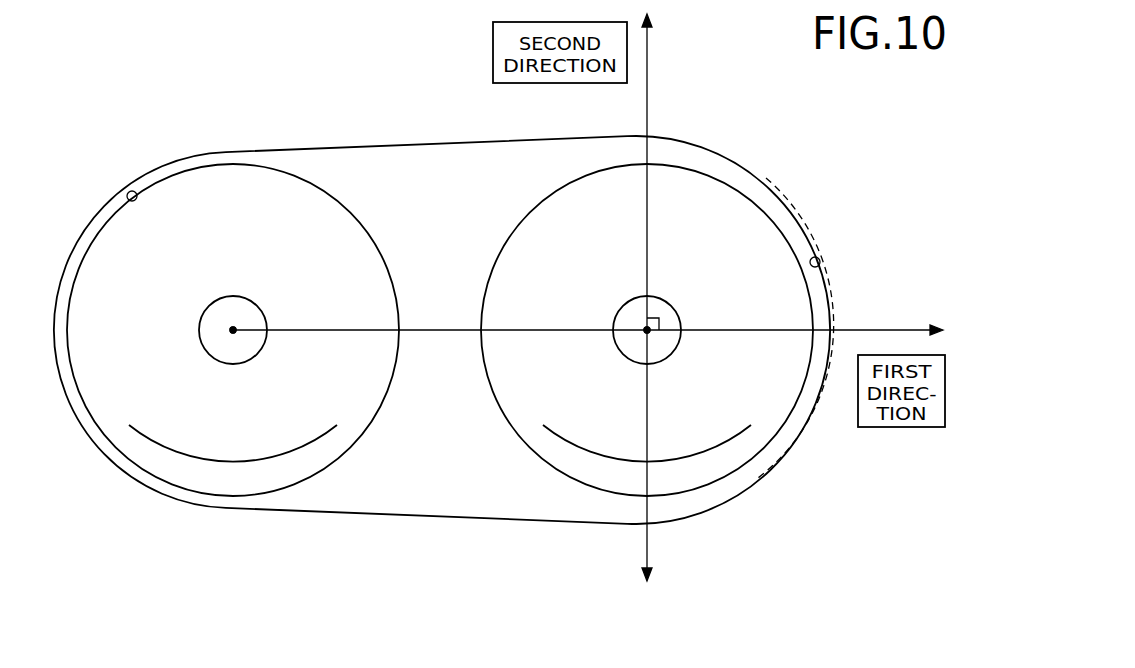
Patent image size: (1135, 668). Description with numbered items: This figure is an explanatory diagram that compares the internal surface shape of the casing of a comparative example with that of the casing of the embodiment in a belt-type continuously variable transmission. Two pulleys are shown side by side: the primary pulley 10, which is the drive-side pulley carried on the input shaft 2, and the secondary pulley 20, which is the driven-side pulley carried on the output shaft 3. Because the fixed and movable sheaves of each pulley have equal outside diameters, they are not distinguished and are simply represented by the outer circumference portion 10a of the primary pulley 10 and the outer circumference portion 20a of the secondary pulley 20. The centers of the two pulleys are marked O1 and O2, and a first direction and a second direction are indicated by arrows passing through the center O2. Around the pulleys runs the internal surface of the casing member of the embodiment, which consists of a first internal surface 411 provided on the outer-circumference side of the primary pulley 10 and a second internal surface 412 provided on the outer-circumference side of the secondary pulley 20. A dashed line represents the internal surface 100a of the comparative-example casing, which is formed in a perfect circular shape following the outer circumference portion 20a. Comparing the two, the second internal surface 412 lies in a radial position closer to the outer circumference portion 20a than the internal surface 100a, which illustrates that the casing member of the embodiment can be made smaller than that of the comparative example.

The input shaft 2 is at (209, 354).
The output shaft 3 is at (671, 354).
The primary pulley 10 is at (303, 178).
The outer circumference portion of the primary pulley 10a is at (185, 490).
The secondary pulley 20 is at (526, 441).
The outer circumference portion of the secondary pulley 20a is at (670, 498).
The first internal surface 411 is at (127, 193).
The second internal surface 412 is at (820, 259).
The internal surface 100a is at (838, 292).
The center of first pulley O1 is at (235, 334).
The center of second pulley O2 is at (645, 334).